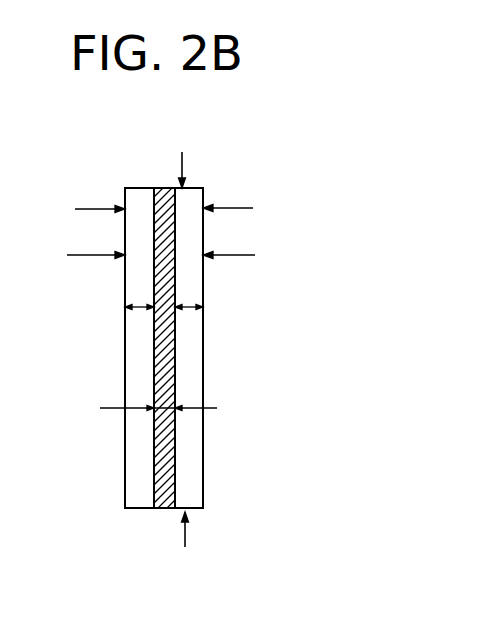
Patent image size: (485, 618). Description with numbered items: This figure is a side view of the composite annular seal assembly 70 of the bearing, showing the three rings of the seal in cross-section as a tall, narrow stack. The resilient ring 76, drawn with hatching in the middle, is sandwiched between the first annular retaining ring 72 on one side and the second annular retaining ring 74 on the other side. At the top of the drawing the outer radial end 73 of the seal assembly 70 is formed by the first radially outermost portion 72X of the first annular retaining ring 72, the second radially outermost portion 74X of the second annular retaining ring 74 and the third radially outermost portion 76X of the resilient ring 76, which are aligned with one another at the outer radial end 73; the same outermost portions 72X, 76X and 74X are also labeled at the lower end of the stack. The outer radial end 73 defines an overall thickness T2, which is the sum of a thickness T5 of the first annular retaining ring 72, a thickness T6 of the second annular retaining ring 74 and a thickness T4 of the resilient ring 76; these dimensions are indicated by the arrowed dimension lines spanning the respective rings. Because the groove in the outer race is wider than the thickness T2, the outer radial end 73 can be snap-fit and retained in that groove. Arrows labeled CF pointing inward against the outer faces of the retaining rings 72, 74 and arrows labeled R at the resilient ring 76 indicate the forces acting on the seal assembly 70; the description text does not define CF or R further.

The composite annular seal assembly 70 is at (285, 284).
The first annular retaining ring 72 is at (137, 200).
The first radially outermost portion 72X is at (146, 187).
The outer radial end 73 is at (149, 522).
The second annular retaining ring 74 is at (188, 200).
The second radially outermost portion 74X is at (201, 188).
The resilient ring 76 is at (166, 188).
The third radially outermost portion 76X is at (154, 187).
The compressive force CF is at (278, 199).
The thickness T2 is at (85, 257).
The thickness of the resilient ring T4 is at (110, 409).
The thickness of the first annular retaining ring T5 is at (140, 308).
The thickness of the second annular retaining ring T6 is at (188, 308).
The reaction direction R is at (184, 162).